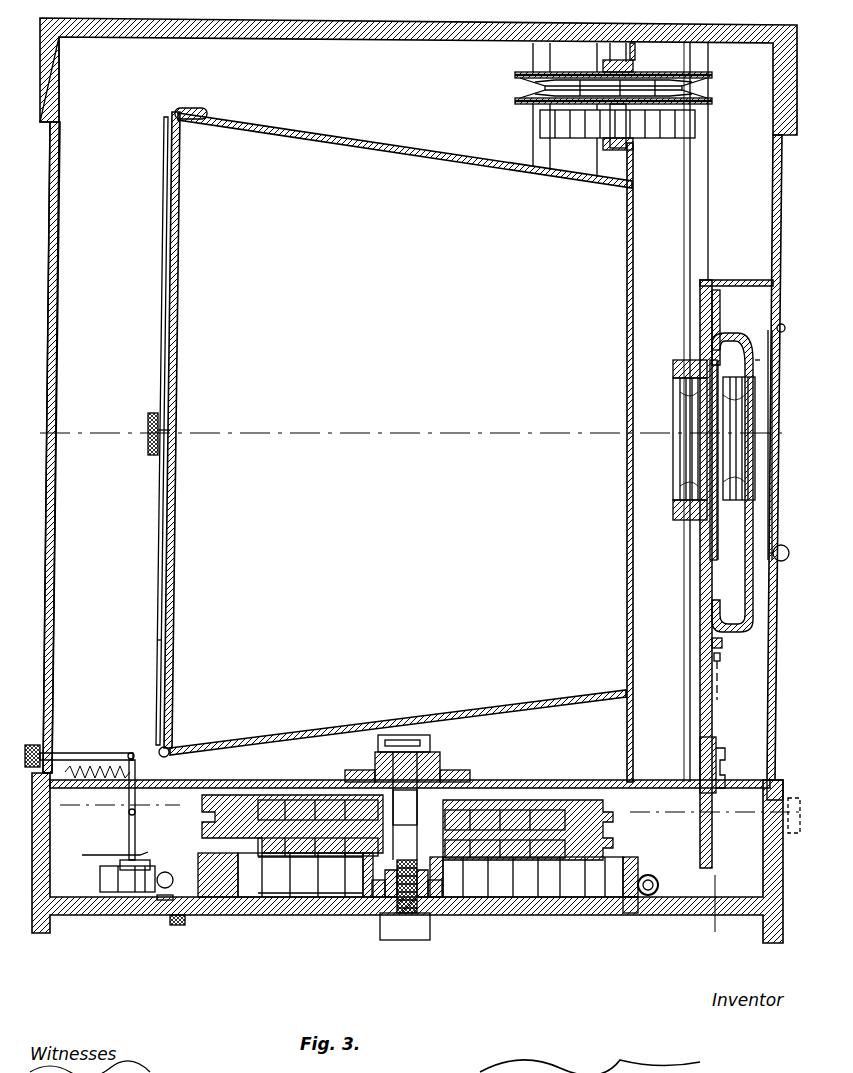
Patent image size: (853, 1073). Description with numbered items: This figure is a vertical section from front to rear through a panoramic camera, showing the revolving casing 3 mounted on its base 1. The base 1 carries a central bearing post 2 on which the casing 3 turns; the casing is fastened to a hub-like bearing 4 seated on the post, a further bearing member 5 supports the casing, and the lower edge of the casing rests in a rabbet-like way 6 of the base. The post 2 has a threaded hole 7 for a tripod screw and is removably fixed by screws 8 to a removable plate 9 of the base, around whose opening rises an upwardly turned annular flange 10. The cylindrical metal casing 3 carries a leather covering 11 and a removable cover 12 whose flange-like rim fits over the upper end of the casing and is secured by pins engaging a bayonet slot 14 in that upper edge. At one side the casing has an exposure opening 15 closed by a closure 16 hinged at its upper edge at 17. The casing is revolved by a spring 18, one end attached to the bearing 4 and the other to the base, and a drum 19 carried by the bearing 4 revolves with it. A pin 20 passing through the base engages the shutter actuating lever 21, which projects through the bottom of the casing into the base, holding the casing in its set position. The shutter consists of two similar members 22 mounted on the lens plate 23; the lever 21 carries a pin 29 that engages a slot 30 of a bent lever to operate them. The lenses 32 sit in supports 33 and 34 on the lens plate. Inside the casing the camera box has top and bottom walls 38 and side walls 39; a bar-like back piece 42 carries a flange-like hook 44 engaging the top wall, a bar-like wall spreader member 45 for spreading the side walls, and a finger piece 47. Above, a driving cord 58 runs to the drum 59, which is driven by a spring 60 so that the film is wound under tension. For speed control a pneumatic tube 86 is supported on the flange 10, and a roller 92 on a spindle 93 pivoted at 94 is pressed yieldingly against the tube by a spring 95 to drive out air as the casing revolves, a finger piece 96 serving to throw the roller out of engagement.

The base 1 is at (690, 915).
The post 2 is at (425, 915).
The casing 3 is at (56, 648).
The bearing 4 is at (378, 805).
The bearing member 5 is at (437, 768).
The rabbet-like way 6 is at (25, 801).
The threaded hole 7 is at (395, 913).
The screws 8 is at (372, 913).
The removable plate 9 is at (548, 915).
The annular flange 10 is at (620, 915).
The covering 11 is at (770, 635).
The cover 12 is at (62, 82).
The bayonet slot 14 is at (85, 851).
The exposure opening 15 is at (770, 520).
The closure 16 is at (773, 480).
The hinge 17 is at (782, 325).
The spring 18 is at (300, 915).
The drum 19 is at (245, 850).
The pin 20 is at (790, 833).
The shutter actuating lever 21 is at (713, 845).
The shutter members 22 is at (712, 520).
The lens plate 23 is at (698, 672).
The pin 29 is at (720, 660).
The slot 30 is at (722, 644).
The lenses 32 is at (725, 380).
The lens support 33 is at (673, 508).
The lens support 34 is at (740, 590).
The top and bottom walls 38 is at (352, 145).
The side walls 39 is at (374, 428).
The back piece 42 is at (168, 168).
The flange-like hook 44 is at (195, 108).
The wall spreader member 45 is at (162, 280).
The finger piece 47 is at (150, 422).
The driving cord 58 is at (515, 74).
The drum 59 is at (520, 90).
The spring 60 is at (540, 120).
The pneumatic tube 86 is at (654, 880).
The roller 92 is at (135, 895).
The spindle 93 is at (136, 840).
The pivot 94 is at (128, 815).
The spring 95 is at (108, 765).
The finger piece 96 is at (75, 752).